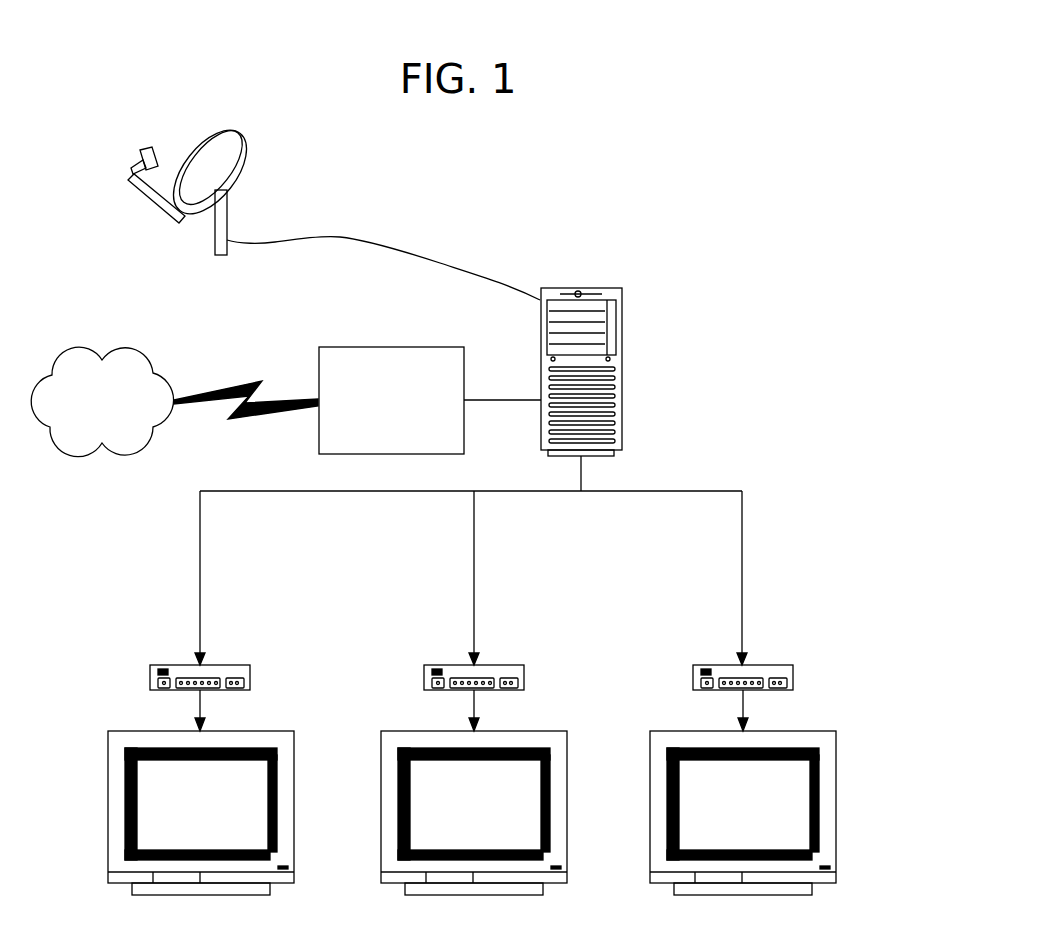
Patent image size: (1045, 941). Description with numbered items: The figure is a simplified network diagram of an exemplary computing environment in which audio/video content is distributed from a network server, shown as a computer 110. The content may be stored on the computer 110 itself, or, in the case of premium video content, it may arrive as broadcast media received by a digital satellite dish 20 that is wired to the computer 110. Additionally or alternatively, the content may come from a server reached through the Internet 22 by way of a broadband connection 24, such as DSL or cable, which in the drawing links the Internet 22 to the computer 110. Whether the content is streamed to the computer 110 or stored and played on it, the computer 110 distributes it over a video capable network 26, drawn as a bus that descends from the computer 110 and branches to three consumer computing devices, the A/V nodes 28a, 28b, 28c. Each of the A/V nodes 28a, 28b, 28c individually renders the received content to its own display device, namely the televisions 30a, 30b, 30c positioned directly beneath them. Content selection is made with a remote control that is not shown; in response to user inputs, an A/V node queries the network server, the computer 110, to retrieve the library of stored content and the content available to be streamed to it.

The digital satellite dish 20 is at (232, 148).
The Internet 22 is at (119, 360).
The broadband connection 24 is at (338, 365).
The computer 110 is at (617, 300).
The video capable network 26 is at (581, 472).
The A/V node 28a is at (237, 665).
The A/V node 28b is at (511, 665).
The A/V node 28c is at (780, 665).
The television 30a is at (281, 731).
The television 30b is at (549, 731).
The television 30c is at (818, 731).